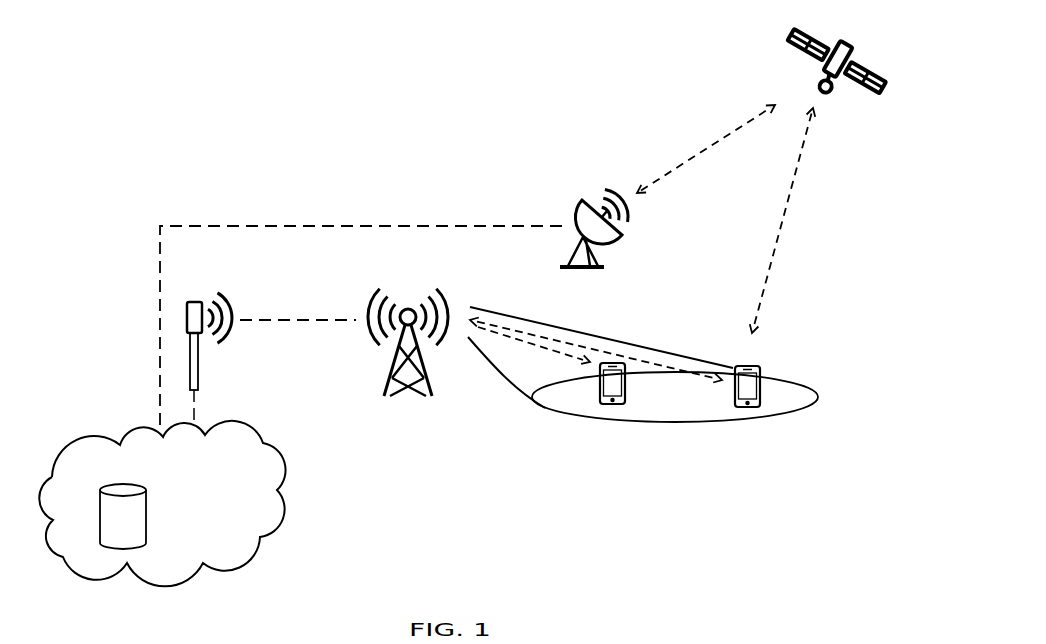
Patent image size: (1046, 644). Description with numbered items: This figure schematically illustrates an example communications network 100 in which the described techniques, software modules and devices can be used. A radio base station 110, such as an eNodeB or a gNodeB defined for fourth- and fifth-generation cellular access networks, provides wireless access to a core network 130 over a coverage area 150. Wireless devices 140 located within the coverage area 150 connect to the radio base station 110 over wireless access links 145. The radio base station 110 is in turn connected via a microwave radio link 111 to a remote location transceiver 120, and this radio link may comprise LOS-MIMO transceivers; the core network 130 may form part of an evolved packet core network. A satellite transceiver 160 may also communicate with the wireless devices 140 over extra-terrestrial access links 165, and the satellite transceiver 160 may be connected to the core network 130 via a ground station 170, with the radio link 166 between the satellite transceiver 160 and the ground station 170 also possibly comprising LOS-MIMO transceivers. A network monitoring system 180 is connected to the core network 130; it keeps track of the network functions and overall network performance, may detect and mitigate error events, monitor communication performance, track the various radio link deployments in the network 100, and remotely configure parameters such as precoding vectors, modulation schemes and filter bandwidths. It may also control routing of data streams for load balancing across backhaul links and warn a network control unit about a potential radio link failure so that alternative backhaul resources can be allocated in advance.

The communications network 100 is at (166, 66).
The radio base station 110 is at (408, 307).
The microwave radio link 111 is at (298, 305).
The remote location transceiver 120 is at (198, 367).
The core network 130 is at (162, 503).
The wireless devices 140 is at (603, 404).
The wireless access links 145 is at (531, 343).
The coverage area 150 is at (803, 382).
The satellite transceiver 160 is at (785, 46).
The extra-terrestrial access links 165 is at (789, 220).
The radio link 166 is at (706, 149).
The ground station 170 is at (573, 205).
The network monitoring system 180 is at (147, 528).